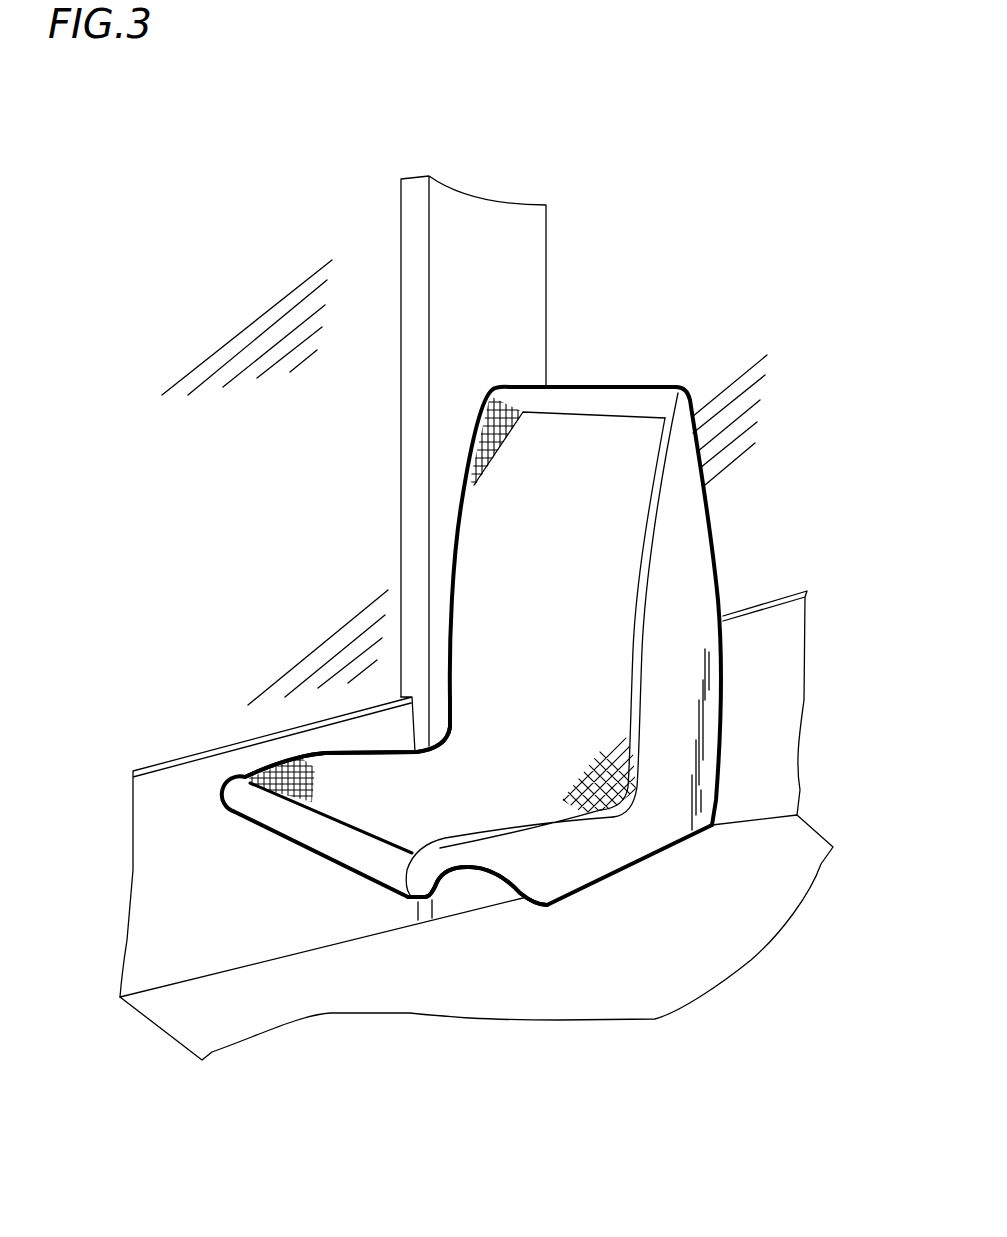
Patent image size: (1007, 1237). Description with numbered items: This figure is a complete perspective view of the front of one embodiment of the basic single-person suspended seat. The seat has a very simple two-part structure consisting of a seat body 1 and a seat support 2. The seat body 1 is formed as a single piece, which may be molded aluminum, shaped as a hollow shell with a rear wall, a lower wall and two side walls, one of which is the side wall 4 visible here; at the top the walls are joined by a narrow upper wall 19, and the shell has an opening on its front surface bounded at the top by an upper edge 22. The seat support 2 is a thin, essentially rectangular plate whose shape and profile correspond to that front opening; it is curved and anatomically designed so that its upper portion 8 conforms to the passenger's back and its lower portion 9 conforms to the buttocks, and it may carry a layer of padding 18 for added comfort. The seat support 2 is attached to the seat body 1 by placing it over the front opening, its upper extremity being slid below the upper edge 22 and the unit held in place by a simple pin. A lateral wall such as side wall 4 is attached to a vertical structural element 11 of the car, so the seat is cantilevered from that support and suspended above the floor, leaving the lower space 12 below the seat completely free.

The seat body 1 is at (688, 872).
The seat support 2 is at (497, 658).
The side wall 4 is at (700, 573).
The upper portion 8 is at (505, 500).
The lower portion 9 is at (330, 768).
The vertical structural element 11 is at (517, 266).
The lower space 12 is at (540, 926).
The layer of padding 18 is at (398, 763).
The upper wall 19 is at (635, 381).
The upper edge 22 is at (565, 407).